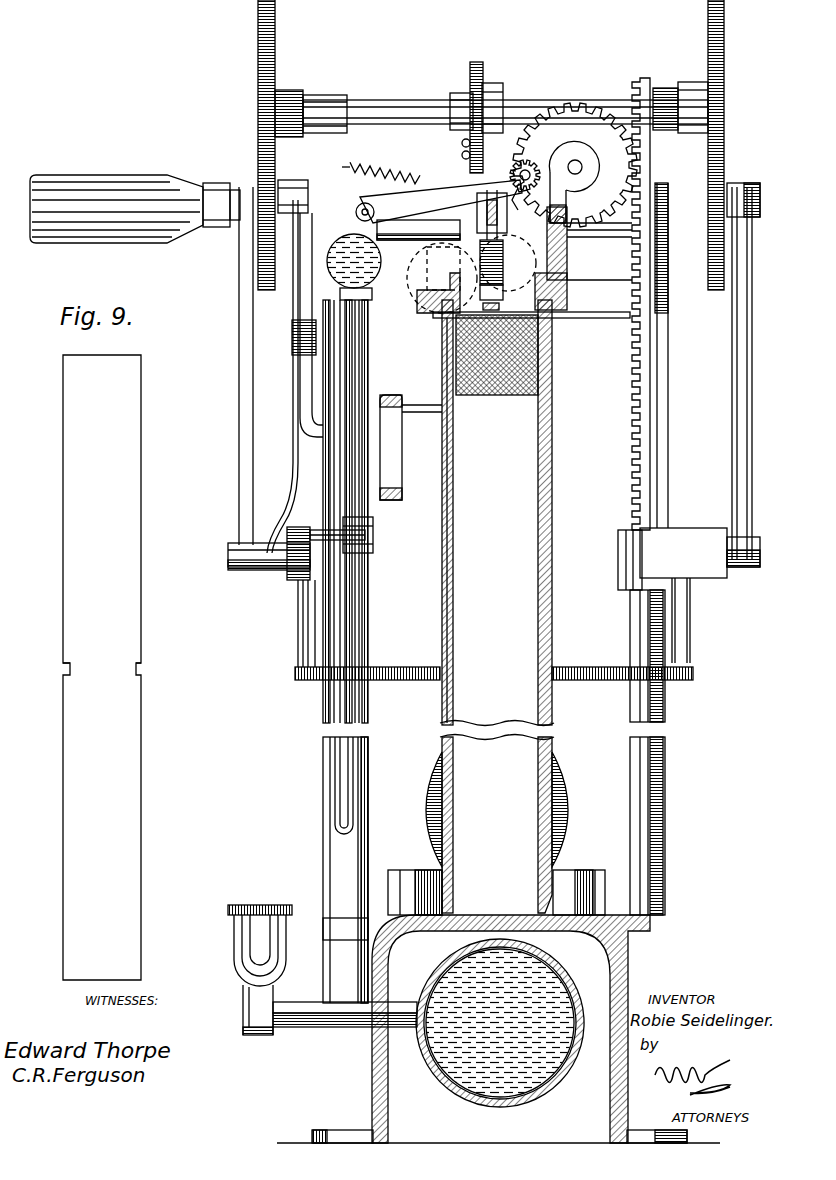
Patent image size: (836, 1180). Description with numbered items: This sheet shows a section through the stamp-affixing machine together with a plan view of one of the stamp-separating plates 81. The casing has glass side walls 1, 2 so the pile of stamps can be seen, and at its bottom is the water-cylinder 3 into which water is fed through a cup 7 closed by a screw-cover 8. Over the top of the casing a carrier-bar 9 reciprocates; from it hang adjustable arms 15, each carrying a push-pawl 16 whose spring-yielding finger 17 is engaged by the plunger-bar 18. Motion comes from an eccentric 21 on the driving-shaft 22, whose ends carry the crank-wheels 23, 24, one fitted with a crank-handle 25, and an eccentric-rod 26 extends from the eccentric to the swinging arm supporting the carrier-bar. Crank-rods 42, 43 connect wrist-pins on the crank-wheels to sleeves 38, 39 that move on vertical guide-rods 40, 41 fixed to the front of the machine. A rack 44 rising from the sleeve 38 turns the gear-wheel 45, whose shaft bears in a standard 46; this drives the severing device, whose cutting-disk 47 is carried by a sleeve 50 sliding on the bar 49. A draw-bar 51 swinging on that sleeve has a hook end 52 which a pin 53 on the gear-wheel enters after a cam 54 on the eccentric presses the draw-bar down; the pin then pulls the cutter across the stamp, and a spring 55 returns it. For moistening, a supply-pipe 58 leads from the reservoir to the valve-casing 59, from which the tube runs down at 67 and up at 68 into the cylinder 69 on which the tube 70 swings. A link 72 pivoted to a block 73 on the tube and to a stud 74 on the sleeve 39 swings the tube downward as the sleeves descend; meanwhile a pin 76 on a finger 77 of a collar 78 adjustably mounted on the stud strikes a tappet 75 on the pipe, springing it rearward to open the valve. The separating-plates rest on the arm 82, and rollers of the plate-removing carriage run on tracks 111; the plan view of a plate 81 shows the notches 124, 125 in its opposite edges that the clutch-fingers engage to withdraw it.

In FIG. 5, the side wall 1 is at (553, 562).
In FIG. 5, the side wall 2 is at (446, 524).
In FIG. 5, the water-cylinder 3 is at (538, 1082).
In FIG. 5, the cup 7 is at (286, 972).
In FIG. 5, the screw-cover 8 is at (280, 905).
In FIG. 5, the carrier-bar 9 is at (486, 208).
In FIG. 5, the arms 15 is at (480, 252).
In FIG. 5, the push-pawl 16 is at (499, 305).
In FIG. 5, the spring-yielding finger 17 is at (503, 290).
In FIG. 5, the plunger-bar 18 is at (503, 213).
In FIG. 5, the eccentric 21 is at (484, 76).
In FIG. 5, the driving-shaft 22 is at (408, 104).
In FIG. 5, the crank-wheel 23 is at (724, 108).
In FIG. 5, the crank-wheel 24 is at (258, 104).
In FIG. 5, the crank-handle 25 is at (167, 178).
In FIG. 5, the eccentric-rod 26 is at (490, 130).
In FIG. 5, the sleeve 38 is at (685, 538).
In FIG. 5, the sleeve 39 is at (310, 600).
In FIG. 5, the guide-rod 40 is at (665, 772).
In FIG. 5, the guide-rod 41 is at (338, 841).
In FIG. 5, the crank-rod 42 is at (746, 478).
In FIG. 5, the crank-rod 43 is at (248, 484).
In FIG. 5, the rack 44 is at (661, 432).
In FIG. 5, the gear-wheel 45 is at (582, 112).
In FIG. 5, the standard 46 is at (568, 152).
In FIG. 5, the cutting-disk 47 is at (416, 296).
In FIG. 5, the bar 49 is at (584, 232).
In FIG. 5, the sleeve 50 is at (440, 224).
In FIG. 5, the draw-bar 51 is at (440, 187).
In FIG. 5, the hook end 52 is at (526, 168).
In FIG. 5, the pin 53 is at (526, 199).
In FIG. 5, the cam 54 is at (461, 145).
In FIG. 5, the spring 55 is at (400, 170).
In FIG. 5, the supply-pipe 58 is at (368, 840).
In FIG. 5, the valve-casing 59 is at (374, 270).
In FIG. 5, the tube 67 is at (368, 645).
In FIG. 5, the tube 68 is at (322, 700).
In FIG. 5, the cylinder 69 is at (313, 180).
In FIG. 5, the tube 70 is at (300, 302).
In FIG. 5, the link 72 is at (292, 445).
In FIG. 5, the block 73 is at (292, 327).
In FIG. 5, the stud 74 is at (280, 575).
In FIG. 5, the tappet 75 is at (370, 522).
In FIG. 5, the pin 76 is at (316, 530).
In FIG. 5, the finger 77 is at (300, 520).
In FIG. 5, the collar 78 is at (290, 594).
In FIG. 5, the separating-plate 81 is at (550, 367).
In FIG. 9, the separating-plate 81 is at (143, 623).
In FIG. 5, the arm 82 is at (508, 402).
In FIG. 5, the tracks 111 is at (432, 266).
In FIG. 9, the notch 124 is at (143, 669).
In FIG. 9, the notch 125 is at (64, 667).